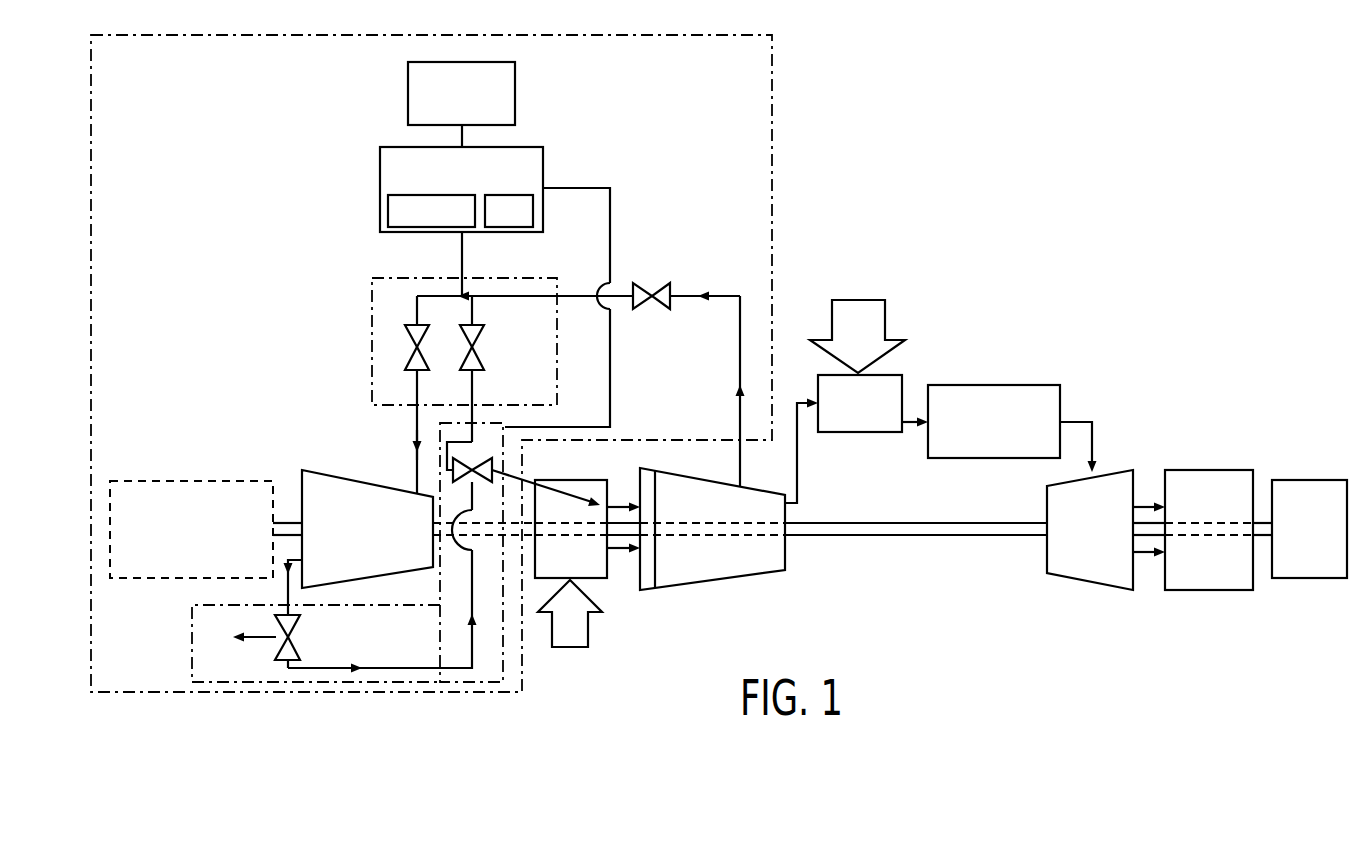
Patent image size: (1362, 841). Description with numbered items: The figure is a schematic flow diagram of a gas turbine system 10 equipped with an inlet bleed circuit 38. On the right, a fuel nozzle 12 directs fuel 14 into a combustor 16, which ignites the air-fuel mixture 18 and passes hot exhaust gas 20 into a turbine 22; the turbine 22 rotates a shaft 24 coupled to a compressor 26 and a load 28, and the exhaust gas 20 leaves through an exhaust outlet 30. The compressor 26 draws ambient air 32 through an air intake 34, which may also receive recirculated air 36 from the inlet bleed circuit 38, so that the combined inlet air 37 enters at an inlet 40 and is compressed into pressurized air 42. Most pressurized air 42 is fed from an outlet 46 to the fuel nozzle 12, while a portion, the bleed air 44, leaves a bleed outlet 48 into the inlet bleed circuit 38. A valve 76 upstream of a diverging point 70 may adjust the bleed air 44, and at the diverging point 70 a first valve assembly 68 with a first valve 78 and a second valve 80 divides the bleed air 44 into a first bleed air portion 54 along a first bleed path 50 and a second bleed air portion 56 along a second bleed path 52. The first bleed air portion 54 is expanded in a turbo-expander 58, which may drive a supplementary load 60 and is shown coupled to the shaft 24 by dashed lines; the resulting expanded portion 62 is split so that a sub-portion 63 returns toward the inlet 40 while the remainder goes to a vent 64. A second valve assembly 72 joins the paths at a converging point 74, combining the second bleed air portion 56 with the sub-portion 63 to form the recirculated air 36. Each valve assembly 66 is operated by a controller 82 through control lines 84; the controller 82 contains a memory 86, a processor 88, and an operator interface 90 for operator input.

The gas turbine system 10 is at (1091, 241).
The fuel nozzle 12 is at (860, 375).
The fuel 14 is at (850, 300).
The combustor 16 is at (980, 385).
The air-fuel mixture 18 is at (906, 424).
The exhaust gas 20 is at (1077, 422).
The turbine 22 is at (1117, 470).
The shaft 24 is at (933, 538).
The compressor 26 is at (720, 580).
The load 28 is at (1310, 480).
The exhaust outlet 30 is at (1203, 470).
The ambient air 32 is at (570, 648).
The air intake 34 is at (618, 553).
The recirculated air 36 is at (510, 474).
The inlet air 37 is at (620, 506).
The inlet bleed circuit 38 is at (773, 145).
The inlet 40 is at (650, 594).
The pressurized air 42 is at (798, 453).
The bleed air 44 is at (716, 295).
The outlet 46 is at (790, 513).
The bleed outlet 48 is at (742, 482).
The first bleed path 50 is at (412, 438).
The second bleed path 52 is at (473, 396).
The first bleed air portion 54 is at (415, 312).
The second bleed air portion 56 is at (451, 369).
The turbo-expander 58 is at (335, 472).
The supplementary load 60 is at (190, 481).
The expanded portion 62 is at (287, 590).
The sub-portion 63 is at (443, 669).
The vent 64 is at (296, 650).
The valve assembly 66 is at (192, 637).
The first valve assembly 68 is at (493, 280).
The diverging point 70 is at (405, 290).
The second valve assembly 72 is at (254, 637).
The converging point 74 is at (453, 482).
The valve 76 is at (660, 290).
The first valve 78 is at (410, 357).
The second valve 80 is at (481, 357).
The controller 82 is at (380, 175).
The control lines 84 is at (611, 205).
The memory 86 is at (388, 210).
The processor 88 is at (533, 210).
The operator interface 90 is at (516, 93).